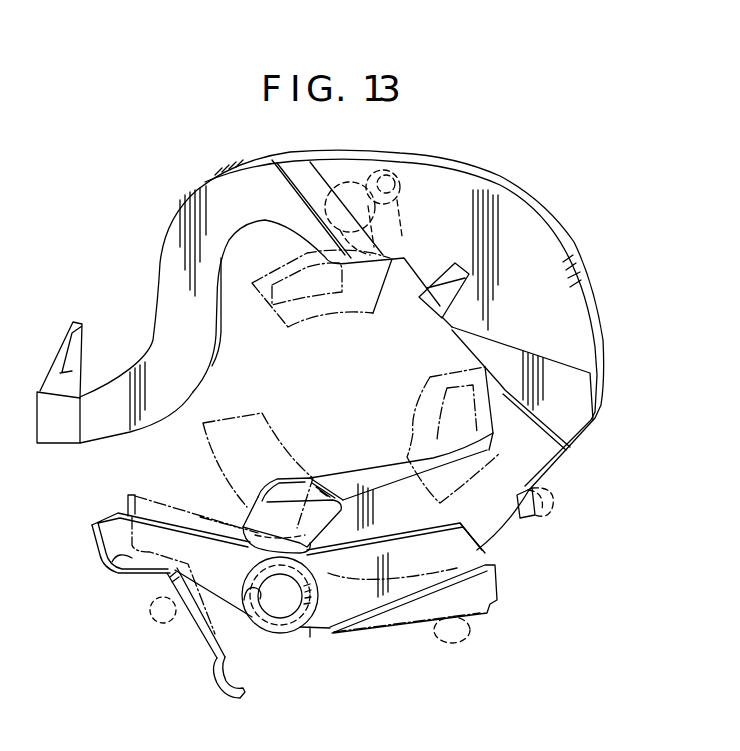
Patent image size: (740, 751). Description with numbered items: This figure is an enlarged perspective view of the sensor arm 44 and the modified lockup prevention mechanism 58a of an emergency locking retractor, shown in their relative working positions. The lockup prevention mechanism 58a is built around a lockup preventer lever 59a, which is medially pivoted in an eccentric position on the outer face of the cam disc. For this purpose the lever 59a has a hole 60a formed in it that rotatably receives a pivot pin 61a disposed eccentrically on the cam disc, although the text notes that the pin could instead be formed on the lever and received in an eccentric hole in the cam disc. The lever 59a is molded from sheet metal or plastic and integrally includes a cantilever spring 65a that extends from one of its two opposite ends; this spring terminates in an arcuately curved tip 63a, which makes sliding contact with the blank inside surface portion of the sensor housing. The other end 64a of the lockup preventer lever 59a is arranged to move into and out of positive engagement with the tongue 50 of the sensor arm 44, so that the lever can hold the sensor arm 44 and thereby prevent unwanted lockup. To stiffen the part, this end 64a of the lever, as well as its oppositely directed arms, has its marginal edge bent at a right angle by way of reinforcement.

The sensor arm 44 is at (548, 212).
The tongue 50 is at (507, 517).
The lockup prevention mechanism 58a is at (310, 638).
The lockup preventer lever 59a is at (110, 515).
The hole 60a is at (253, 592).
The pivot pin 61a is at (283, 607).
The arcuately curved tip 63a is at (213, 698).
The other end of the lockup preventer lever 64a is at (487, 553).
The cantilever spring 65a is at (198, 643).